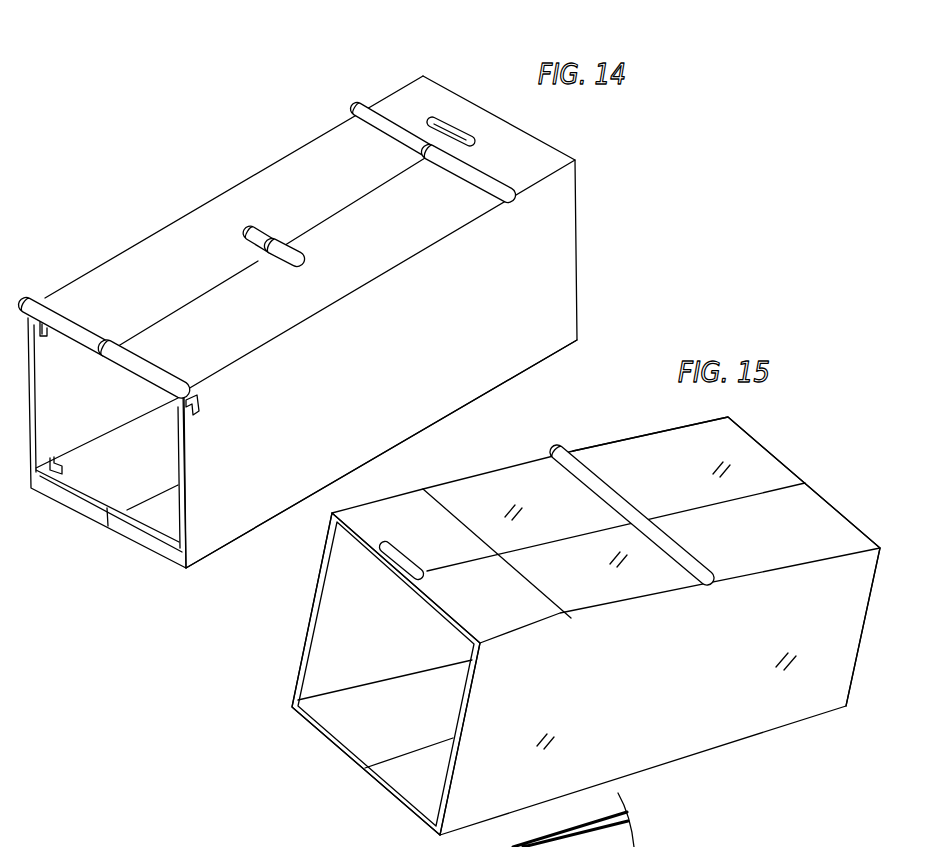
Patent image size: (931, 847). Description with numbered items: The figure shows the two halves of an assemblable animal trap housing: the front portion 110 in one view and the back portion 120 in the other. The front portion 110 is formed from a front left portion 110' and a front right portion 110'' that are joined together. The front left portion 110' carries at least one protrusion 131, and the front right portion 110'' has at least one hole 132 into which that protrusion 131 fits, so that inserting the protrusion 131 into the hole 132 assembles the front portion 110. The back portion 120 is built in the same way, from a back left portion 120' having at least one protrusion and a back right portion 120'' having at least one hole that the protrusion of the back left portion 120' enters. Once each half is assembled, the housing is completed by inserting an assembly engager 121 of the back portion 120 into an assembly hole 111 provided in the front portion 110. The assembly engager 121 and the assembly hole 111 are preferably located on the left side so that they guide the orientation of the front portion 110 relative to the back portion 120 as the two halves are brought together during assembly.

In FIG. 14, the front portion 110 is at (302, 315).
In FIG. 14, the front left portion 110' is at (235, 212).
In FIG. 14, the front right portion 110'' is at (380, 443).
In FIG. 14, the assembly hole 111 is at (453, 134).
In FIG. 14, the protrusion 131 is at (257, 230).
In FIG. 14, the hole 132 is at (302, 255).
In FIG. 15, the back portion 120 is at (543, 626).
In FIG. 15, the back left portion 120' is at (715, 535).
In FIG. 15, the back right portion 120'' is at (508, 662).
In FIG. 15, the assembly engager 121 is at (395, 560).